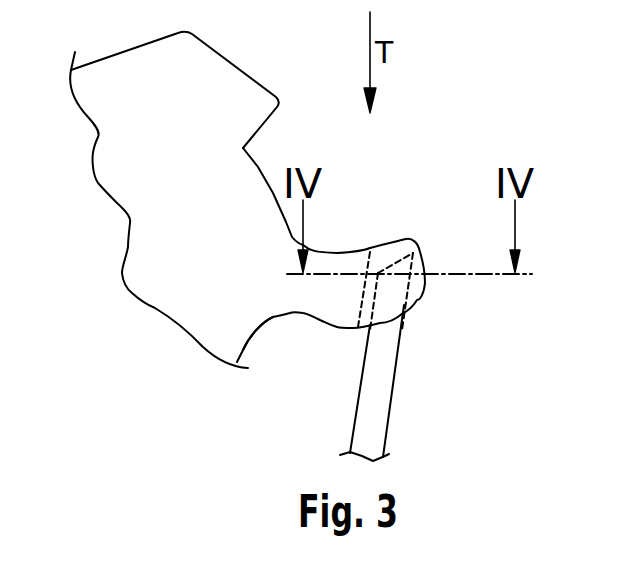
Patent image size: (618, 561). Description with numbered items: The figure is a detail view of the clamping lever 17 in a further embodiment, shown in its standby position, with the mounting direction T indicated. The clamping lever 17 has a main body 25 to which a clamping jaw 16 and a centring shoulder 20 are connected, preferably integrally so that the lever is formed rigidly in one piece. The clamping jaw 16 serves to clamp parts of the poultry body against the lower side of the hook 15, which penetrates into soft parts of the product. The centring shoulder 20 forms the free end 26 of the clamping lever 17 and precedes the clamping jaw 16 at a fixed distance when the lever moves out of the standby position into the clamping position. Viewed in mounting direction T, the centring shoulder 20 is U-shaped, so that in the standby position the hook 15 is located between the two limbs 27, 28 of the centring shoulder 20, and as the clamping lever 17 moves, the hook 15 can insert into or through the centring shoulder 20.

The hook 15 is at (373, 383).
The clamping jaw 16 is at (213, 73).
The clamping lever 17 is at (147, 180).
The centring shoulder 20 is at (349, 252).
The main body 25 is at (205, 295).
The free end 26 is at (413, 240).
The limb 27 is at (318, 300).
The limb 28 is at (258, 333).